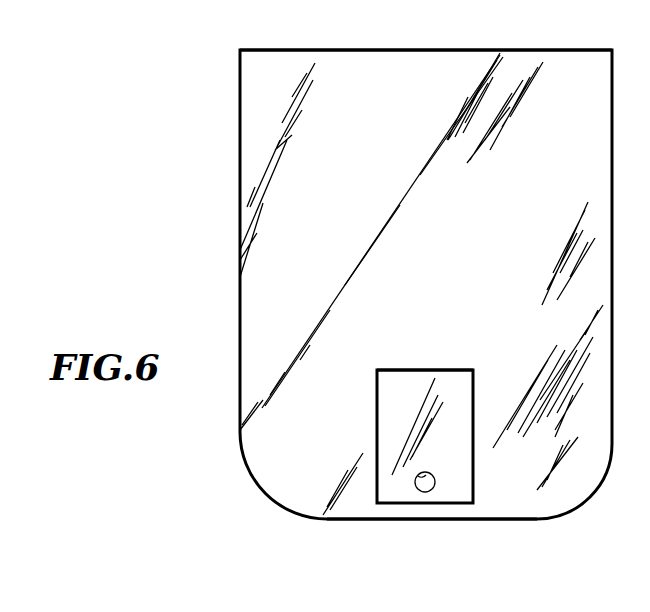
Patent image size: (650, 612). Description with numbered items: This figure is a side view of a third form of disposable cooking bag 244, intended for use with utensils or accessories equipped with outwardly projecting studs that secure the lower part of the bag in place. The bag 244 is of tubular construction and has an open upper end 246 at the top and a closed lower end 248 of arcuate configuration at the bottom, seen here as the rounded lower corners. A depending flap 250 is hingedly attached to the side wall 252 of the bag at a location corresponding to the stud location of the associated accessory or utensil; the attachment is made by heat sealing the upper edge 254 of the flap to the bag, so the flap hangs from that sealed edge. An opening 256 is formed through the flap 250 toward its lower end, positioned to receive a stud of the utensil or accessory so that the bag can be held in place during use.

The disposable cooking bag 244 is at (233, 121).
The open upper end 246 is at (482, 50).
The closed lower end 248 is at (430, 520).
The depending flap 250 is at (474, 389).
The side wall 252 is at (472, 188).
The upper edge of flap 254 is at (427, 370).
The opening 256 is at (434, 477).